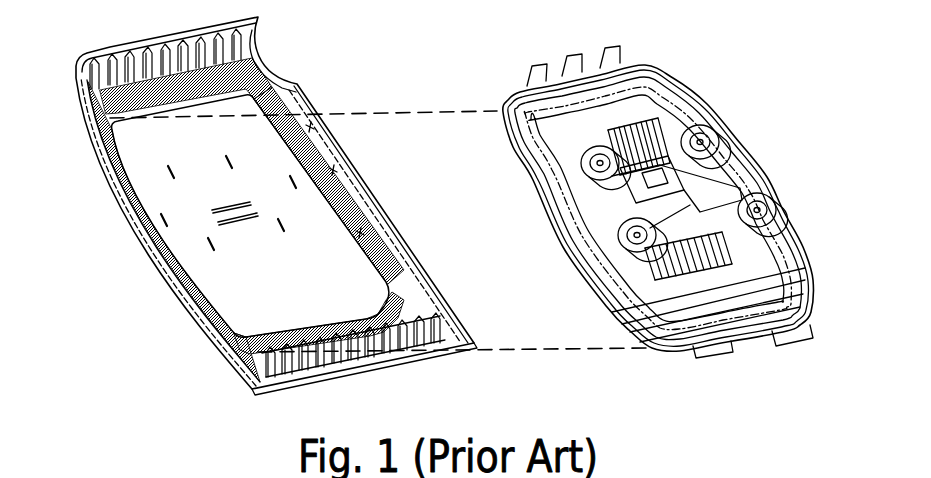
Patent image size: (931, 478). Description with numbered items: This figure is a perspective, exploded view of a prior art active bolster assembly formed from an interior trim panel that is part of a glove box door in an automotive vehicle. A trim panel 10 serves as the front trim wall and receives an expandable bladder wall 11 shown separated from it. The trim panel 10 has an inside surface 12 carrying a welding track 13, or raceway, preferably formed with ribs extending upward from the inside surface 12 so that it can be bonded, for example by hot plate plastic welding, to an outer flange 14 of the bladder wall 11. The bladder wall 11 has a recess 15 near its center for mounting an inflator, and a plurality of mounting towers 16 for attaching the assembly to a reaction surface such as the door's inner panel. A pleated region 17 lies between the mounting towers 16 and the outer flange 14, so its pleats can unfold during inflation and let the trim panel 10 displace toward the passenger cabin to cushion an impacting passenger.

The trim panel 10 is at (197, 330).
The bladder wall 11 is at (725, 120).
The inside surface 12 is at (158, 186).
The welding track 13 is at (384, 260).
The outer flange 14 is at (803, 307).
The recess 15 is at (668, 188).
The mounting towers 16 is at (593, 154).
The pleated region 17 is at (540, 110).